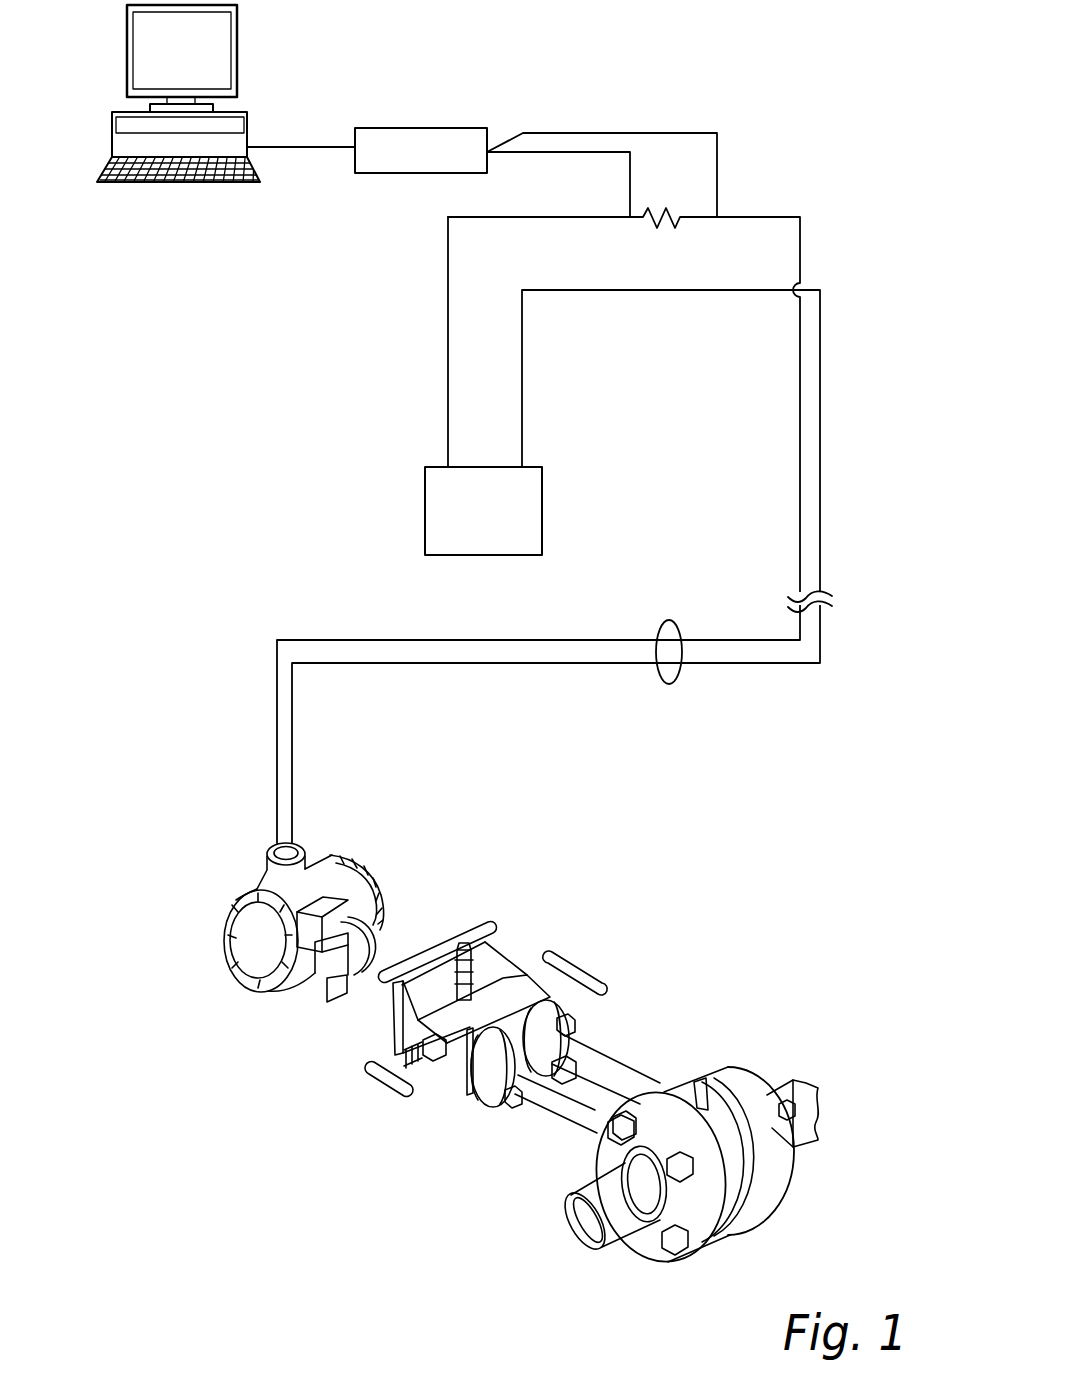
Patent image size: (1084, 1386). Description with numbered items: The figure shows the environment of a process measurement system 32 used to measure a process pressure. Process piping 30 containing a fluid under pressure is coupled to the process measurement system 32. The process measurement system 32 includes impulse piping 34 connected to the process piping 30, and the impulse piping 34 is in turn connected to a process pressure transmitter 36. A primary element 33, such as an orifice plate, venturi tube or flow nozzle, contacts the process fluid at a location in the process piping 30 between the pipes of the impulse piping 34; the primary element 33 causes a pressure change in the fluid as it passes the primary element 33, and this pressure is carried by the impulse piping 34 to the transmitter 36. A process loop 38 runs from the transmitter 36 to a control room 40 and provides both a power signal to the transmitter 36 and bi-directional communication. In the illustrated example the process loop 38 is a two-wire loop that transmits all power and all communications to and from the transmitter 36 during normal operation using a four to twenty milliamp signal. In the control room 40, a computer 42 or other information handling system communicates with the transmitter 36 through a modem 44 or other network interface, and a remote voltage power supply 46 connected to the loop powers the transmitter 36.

The process piping 30 is at (807, 1137).
The process measurement system 32 is at (641, 977).
The primary element 33 is at (749, 1214).
The impulse piping 34 is at (569, 1108).
The process pressure transmitter 36 is at (364, 850).
The process loop 38 is at (670, 683).
The control room 40 is at (356, 359).
The computer 42 is at (247, 125).
The modem 44 is at (422, 128).
The remote voltage power supply 46 is at (456, 555).